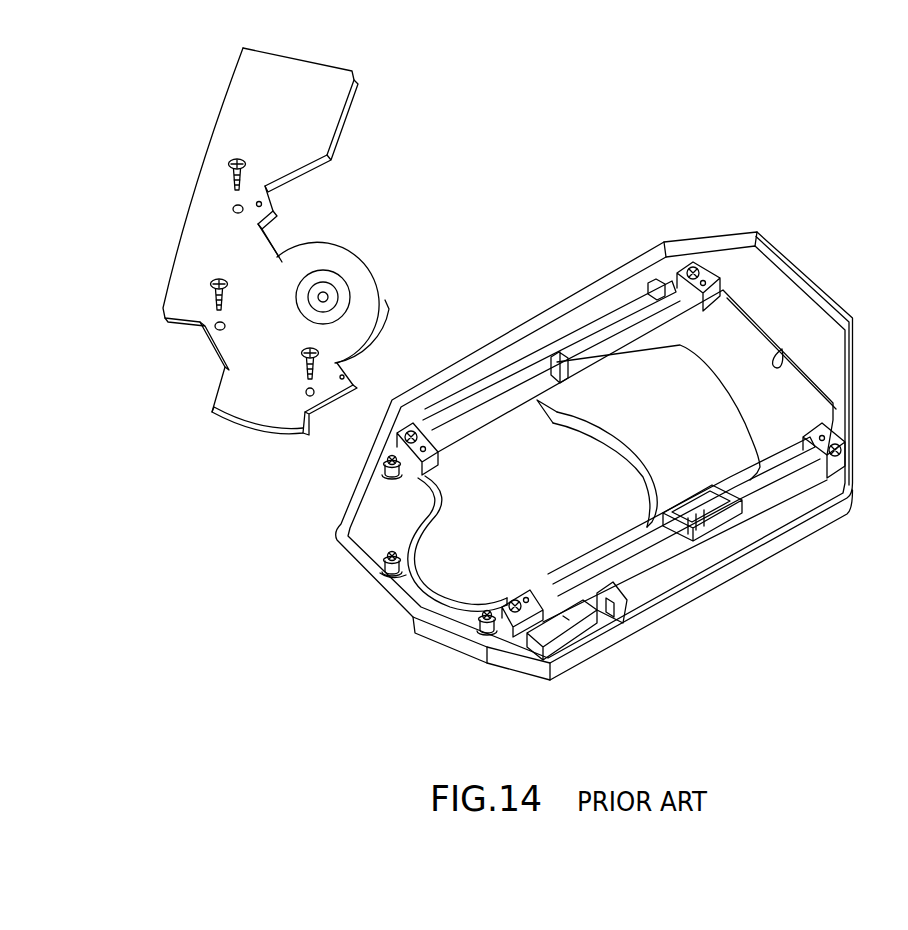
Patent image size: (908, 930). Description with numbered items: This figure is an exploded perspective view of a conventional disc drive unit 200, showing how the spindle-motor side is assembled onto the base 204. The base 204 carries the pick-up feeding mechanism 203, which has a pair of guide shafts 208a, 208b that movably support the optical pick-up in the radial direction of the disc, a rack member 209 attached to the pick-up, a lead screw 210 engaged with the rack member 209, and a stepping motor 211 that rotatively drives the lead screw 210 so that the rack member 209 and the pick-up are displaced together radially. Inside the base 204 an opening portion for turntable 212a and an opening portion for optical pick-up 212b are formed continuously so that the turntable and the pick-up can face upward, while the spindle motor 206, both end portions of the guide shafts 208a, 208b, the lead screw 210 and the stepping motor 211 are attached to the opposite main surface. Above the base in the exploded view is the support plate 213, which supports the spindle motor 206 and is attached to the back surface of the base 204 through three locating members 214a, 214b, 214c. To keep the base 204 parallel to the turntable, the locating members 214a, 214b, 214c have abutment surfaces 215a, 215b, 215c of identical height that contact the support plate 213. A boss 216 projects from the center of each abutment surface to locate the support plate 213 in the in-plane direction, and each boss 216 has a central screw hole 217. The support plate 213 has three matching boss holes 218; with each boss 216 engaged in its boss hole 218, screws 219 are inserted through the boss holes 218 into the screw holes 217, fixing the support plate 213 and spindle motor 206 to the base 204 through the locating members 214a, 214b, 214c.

The disc drive unit 200 is at (192, 57).
The pick-up feeding mechanism 203 is at (705, 397).
The base 204 is at (530, 320).
The spindle motor 206 is at (388, 318).
The guide shaft 208a is at (770, 475).
The guide shaft 208b is at (628, 325).
The rack member 209 is at (710, 522).
The lead screw 210 is at (600, 612).
The stepping motor 211 is at (557, 628).
The opening portion for turntable 212a is at (410, 523).
The opening portion for optical pick-up 212b is at (780, 357).
The support plate 213 is at (342, 261).
The locating member 214a is at (393, 585).
The locating member 214b is at (405, 462).
The locating member 214c is at (474, 641).
The abutment surface 215a is at (384, 565).
The abutment surface 215b is at (385, 465).
The abutment surface 215c is at (478, 628).
The boss 216 is at (384, 466).
The screw hole 217 is at (390, 456).
The boss hole 218 is at (233, 208).
The screw 219 is at (229, 170).